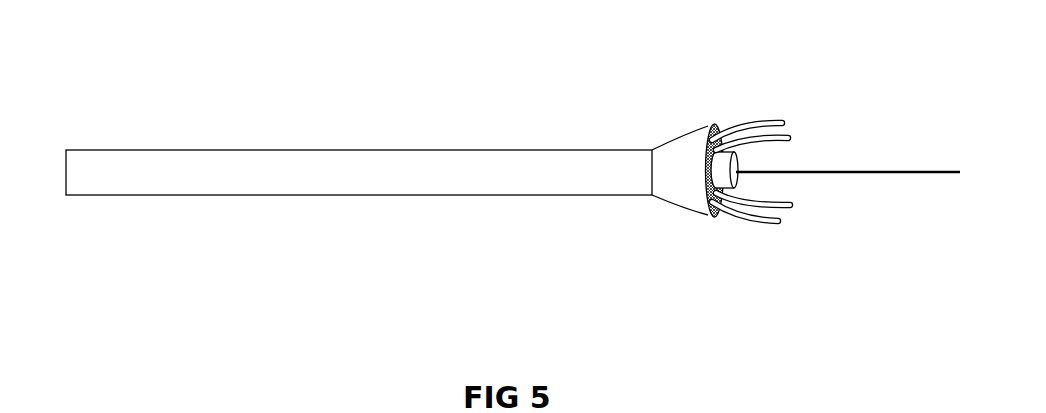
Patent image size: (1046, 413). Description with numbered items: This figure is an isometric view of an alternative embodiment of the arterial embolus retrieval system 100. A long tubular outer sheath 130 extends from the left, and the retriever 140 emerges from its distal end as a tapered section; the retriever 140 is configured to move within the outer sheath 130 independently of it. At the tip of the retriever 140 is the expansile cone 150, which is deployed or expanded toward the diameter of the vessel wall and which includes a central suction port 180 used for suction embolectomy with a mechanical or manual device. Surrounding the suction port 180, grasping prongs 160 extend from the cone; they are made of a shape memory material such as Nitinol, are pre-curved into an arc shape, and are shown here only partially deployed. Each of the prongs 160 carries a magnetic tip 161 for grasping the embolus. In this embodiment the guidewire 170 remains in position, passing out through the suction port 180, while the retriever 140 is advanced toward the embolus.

The arterial embolus retrieval system 100 is at (107, 63).
The outer sheath 130 is at (427, 150).
The retriever 140 is at (665, 145).
The expansile cone 150 is at (687, 135).
The prongs 160 is at (715, 217).
The magnetic tip 161 is at (792, 203).
The guidewire 170 is at (898, 173).
The suction port 180 is at (782, 169).